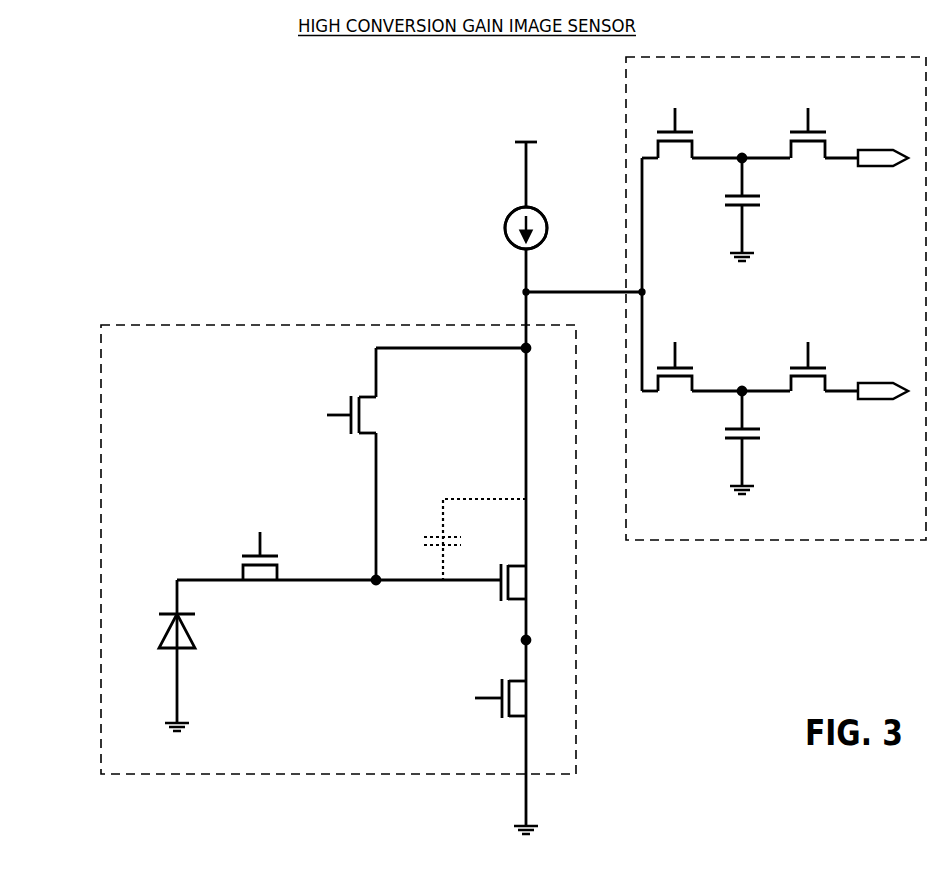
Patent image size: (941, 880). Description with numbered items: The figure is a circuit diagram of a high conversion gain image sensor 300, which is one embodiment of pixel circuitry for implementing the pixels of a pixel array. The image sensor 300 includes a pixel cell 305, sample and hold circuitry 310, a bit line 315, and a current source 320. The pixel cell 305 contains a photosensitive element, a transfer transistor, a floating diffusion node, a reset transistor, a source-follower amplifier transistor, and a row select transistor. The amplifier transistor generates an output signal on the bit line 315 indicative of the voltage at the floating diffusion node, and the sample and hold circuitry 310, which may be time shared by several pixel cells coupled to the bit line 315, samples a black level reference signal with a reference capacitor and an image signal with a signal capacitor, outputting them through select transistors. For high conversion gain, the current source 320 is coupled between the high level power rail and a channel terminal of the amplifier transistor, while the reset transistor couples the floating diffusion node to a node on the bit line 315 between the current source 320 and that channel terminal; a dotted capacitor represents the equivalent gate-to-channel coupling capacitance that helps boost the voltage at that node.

The high conversion gain image sensor 300 is at (109, 133).
The pixel cell 305 is at (246, 354).
The sample and hold circuitry 310 is at (900, 534).
The bit line 315 is at (526, 307).
The current source 320 is at (504, 230).